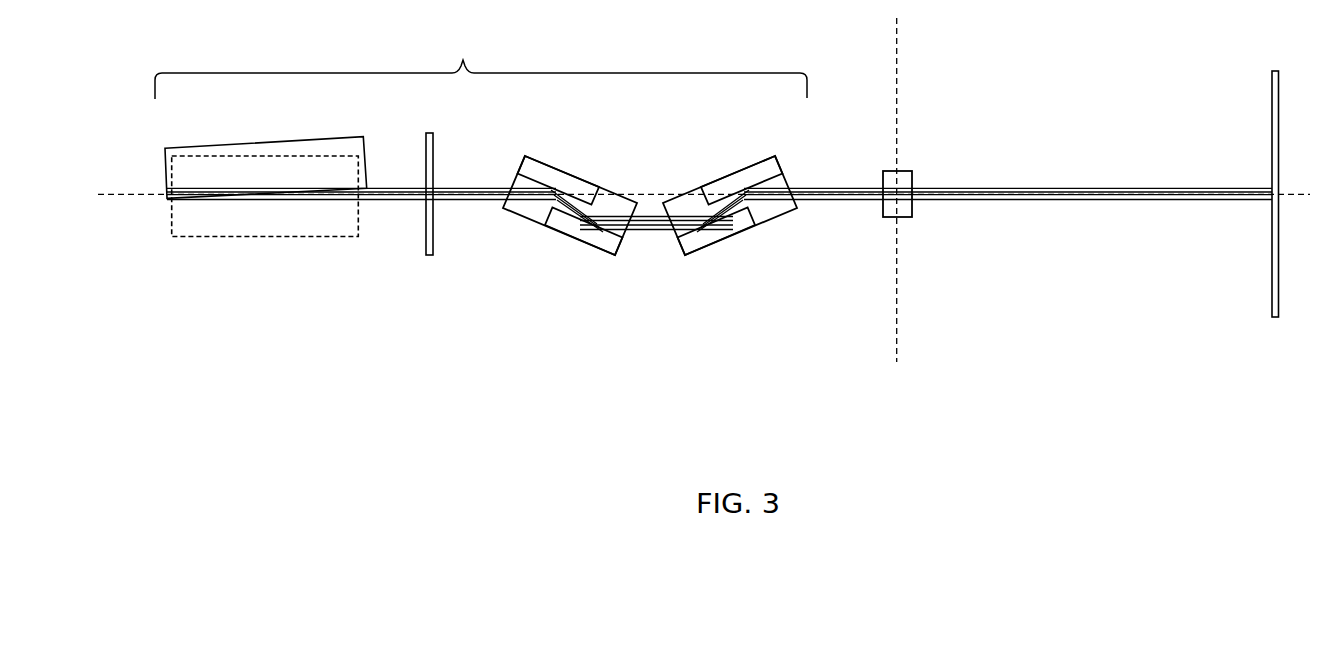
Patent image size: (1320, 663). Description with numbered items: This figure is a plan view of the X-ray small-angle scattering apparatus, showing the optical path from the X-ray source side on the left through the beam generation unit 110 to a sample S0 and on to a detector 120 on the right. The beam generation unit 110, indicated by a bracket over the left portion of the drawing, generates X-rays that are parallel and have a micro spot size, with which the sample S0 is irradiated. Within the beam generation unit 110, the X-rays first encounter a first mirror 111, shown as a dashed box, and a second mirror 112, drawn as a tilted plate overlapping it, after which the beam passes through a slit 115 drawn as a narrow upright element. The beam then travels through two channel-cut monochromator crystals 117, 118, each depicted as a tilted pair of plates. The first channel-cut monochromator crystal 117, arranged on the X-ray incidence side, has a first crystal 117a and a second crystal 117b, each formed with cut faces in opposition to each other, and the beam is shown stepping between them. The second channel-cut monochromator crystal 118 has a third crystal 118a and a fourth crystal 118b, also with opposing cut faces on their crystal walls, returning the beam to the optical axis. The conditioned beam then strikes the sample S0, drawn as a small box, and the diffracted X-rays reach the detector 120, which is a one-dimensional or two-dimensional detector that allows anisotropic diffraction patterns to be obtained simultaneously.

The beam generation unit 110 is at (481, 65).
The first mirror 111 is at (227, 238).
The second mirror 112 is at (361, 197).
The slit 115 is at (428, 257).
The first channel-cut monochromator crystal 117 is at (570, 208).
The first crystal 117a is at (572, 176).
The second crystal 117b is at (586, 245).
The second channel-cut monochromator crystal 118 is at (730, 204).
The third crystal 118a is at (698, 248).
The fourth crystal 118b is at (748, 166).
The sample S0 is at (883, 220).
The detector 120 is at (1275, 318).